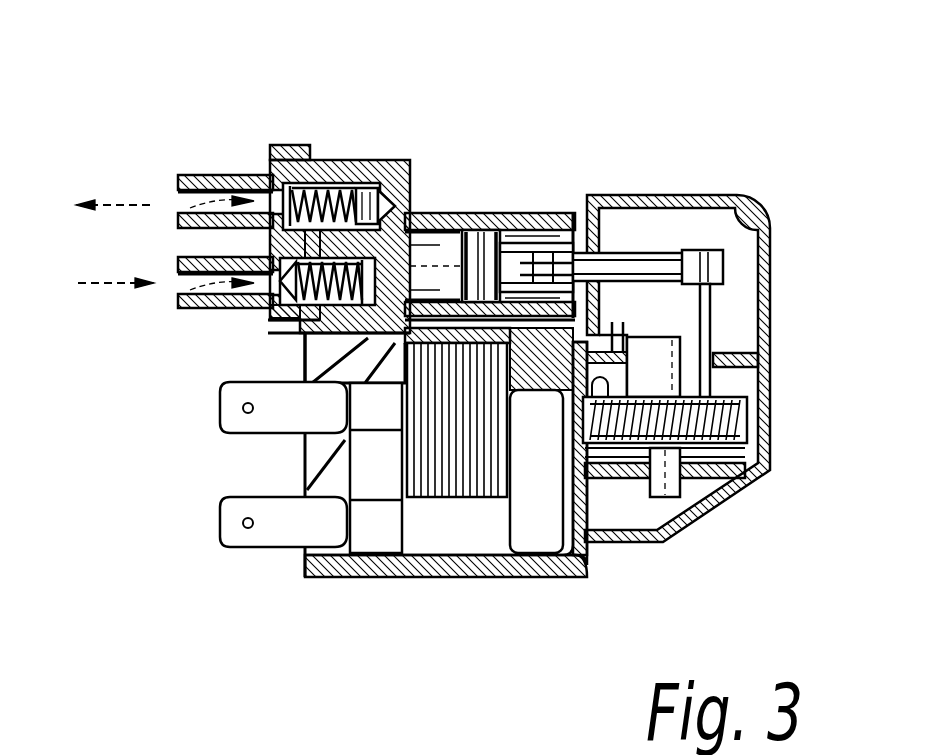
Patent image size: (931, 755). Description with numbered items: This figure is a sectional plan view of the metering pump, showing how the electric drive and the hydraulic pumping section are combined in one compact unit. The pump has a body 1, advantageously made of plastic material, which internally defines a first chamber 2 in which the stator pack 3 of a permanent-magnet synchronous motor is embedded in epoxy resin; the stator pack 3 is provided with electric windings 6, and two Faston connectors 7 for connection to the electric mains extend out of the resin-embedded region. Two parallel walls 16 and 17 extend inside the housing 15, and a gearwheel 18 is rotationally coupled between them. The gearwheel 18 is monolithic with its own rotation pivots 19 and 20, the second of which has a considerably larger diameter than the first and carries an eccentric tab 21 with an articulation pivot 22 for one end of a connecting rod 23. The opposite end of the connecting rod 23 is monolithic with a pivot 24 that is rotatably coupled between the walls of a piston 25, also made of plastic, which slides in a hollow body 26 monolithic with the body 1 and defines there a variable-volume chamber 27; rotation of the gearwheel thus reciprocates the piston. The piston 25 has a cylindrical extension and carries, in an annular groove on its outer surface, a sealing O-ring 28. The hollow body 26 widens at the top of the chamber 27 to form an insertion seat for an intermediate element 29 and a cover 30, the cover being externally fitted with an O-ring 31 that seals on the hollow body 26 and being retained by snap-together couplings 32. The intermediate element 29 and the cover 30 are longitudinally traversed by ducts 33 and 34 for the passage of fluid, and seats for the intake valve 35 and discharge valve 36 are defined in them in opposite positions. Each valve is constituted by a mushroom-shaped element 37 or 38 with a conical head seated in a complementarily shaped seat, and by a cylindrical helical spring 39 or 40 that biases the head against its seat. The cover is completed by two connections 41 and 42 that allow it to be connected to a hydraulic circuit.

The body 1 is at (312, 578).
The first chamber 2 is at (380, 575).
The stator pack 3 is at (458, 580).
The electric windings 6 is at (555, 565).
The Faston connectors 7 is at (262, 432).
The housing 15 is at (768, 470).
The parallel wall 16 is at (712, 500).
The parallel wall 17 is at (745, 355).
The gearwheel 18 is at (735, 440).
The rotation pivot 19 is at (662, 495).
The rotation pivot 20 is at (680, 392).
The eccentric tab 21 is at (710, 300).
The articulation pivot 22 is at (700, 252).
The connecting rod 23 is at (685, 250).
The pivot 24 is at (600, 215).
The piston 25 is at (560, 255).
The hollow body 26 is at (520, 265).
The variable-volume chamber 27 is at (475, 240).
The sealing O-ring 28 is at (490, 230).
The intermediate element 29 is at (405, 200).
The cover 30 is at (320, 150).
The O-ring 31 is at (330, 165).
The snap-together couplings 32 is at (275, 160).
The duct 33 is at (445, 235).
The duct 34 is at (300, 370).
The intake valve 35 is at (285, 300).
The discharge valve 36 is at (218, 175).
The mushroom-shaped element 37 is at (300, 300).
The mushroom-shaped element 38 is at (357, 190).
The cylindrical helical spring 39 is at (300, 320).
The cylindrical helical spring 40 is at (290, 240).
The connection 41 is at (200, 305).
The connection 42 is at (185, 170).